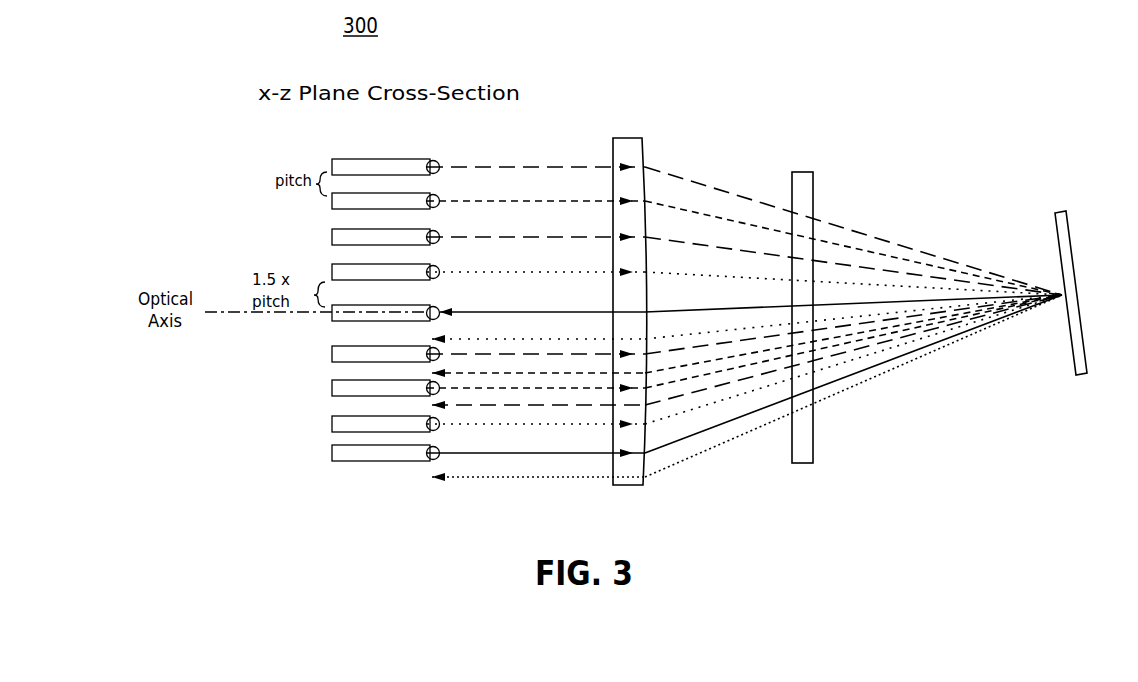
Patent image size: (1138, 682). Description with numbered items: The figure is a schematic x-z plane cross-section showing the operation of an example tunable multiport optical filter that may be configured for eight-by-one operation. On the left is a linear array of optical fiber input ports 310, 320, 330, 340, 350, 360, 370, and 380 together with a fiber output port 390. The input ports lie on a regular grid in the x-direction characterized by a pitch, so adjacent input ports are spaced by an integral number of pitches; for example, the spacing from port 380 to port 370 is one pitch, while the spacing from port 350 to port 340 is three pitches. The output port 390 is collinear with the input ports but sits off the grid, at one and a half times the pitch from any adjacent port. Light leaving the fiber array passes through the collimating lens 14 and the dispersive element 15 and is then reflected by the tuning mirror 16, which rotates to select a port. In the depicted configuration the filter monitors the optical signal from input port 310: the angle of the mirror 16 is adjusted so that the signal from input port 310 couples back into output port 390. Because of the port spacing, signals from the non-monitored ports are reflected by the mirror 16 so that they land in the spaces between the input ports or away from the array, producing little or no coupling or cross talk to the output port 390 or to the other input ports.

The collimating lens 14 is at (642, 138).
The dispersive element 15 is at (803, 172).
The tuning mirror 16 is at (1063, 212).
The optical fiber input port 310 is at (332, 446).
The optical fiber input port 320 is at (332, 417).
The optical fiber input port 330 is at (332, 381).
The optical fiber input port 340 is at (332, 347).
The optical fiber input port 350 is at (332, 272).
The optical fiber input port 360 is at (332, 232).
The optical fiber input port 370 is at (332, 209).
The optical fiber input port 380 is at (332, 159).
The fiber output port 390 is at (332, 321).